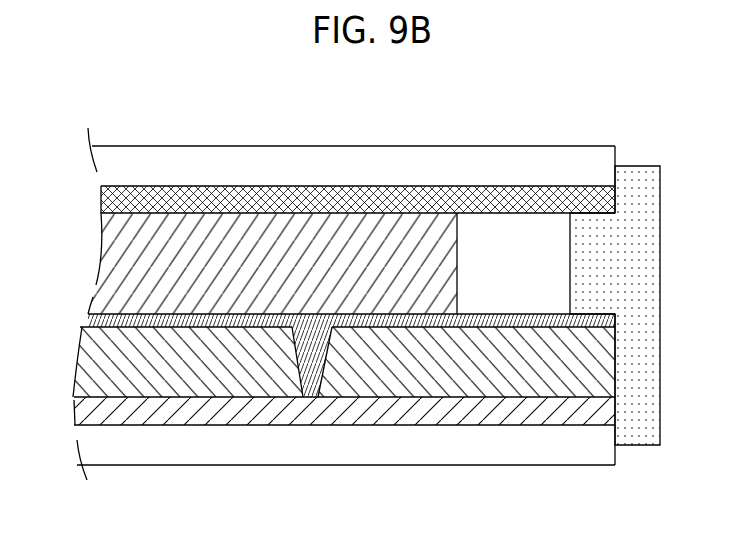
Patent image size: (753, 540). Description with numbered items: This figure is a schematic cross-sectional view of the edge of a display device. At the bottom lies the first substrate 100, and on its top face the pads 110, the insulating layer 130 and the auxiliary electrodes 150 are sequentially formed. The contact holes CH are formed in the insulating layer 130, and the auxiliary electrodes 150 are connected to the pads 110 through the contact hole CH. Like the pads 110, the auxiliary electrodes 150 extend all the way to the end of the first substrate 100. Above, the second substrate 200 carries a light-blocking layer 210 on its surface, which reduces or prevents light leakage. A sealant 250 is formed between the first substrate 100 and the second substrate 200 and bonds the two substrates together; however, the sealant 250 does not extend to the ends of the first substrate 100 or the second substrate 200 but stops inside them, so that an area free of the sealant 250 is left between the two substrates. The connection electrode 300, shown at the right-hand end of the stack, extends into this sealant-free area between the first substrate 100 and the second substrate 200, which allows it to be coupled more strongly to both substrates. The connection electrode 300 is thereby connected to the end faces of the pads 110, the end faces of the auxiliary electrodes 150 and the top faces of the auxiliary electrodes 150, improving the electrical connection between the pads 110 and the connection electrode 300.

The first substrate 100 is at (205, 448).
The pad 110 is at (308, 417).
The insulating layer 130 is at (493, 365).
The auxiliary electrode 150 is at (102, 322).
The contact hole CH is at (315, 367).
The second substrate 200 is at (197, 168).
The light-blocking layer 210 is at (267, 198).
The sealant 250 is at (333, 237).
The connection electrode 300 is at (630, 197).